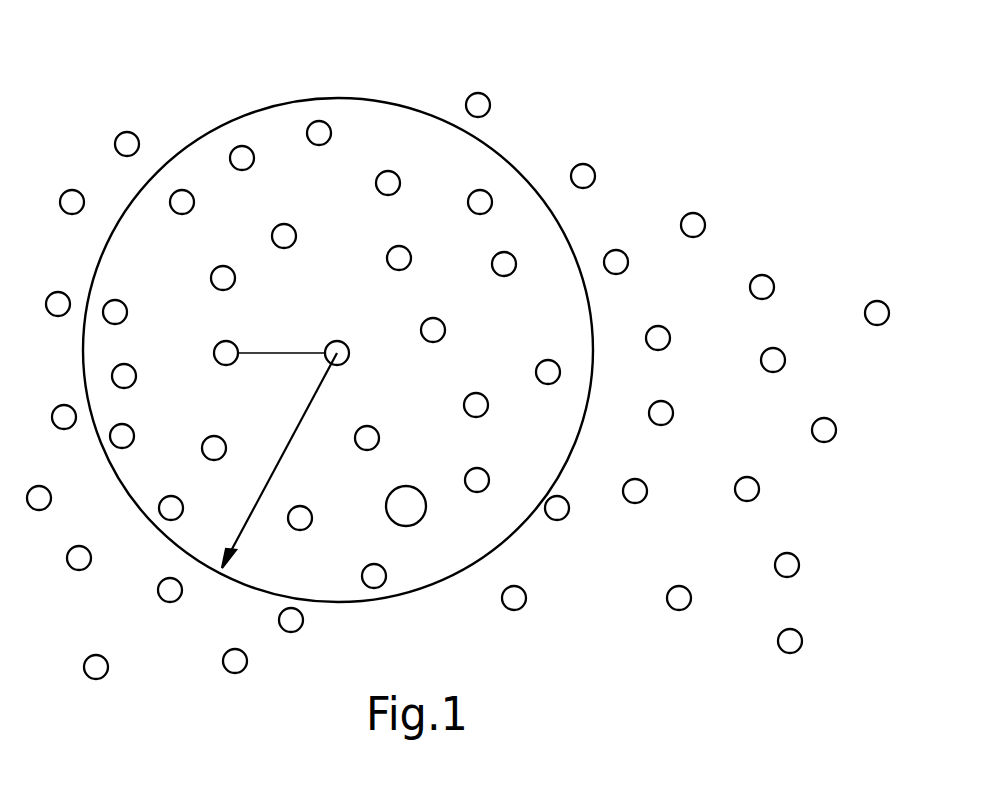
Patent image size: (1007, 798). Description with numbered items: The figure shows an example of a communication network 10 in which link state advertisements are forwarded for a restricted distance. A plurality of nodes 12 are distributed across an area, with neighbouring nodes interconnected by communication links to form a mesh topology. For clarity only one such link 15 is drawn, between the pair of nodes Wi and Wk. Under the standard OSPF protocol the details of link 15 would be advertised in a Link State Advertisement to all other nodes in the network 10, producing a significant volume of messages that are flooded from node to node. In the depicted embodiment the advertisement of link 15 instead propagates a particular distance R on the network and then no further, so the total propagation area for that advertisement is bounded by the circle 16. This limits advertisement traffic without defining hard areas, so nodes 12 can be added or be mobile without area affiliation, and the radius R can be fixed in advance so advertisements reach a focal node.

The communication network 10 is at (659, 96).
The node 12 is at (119, 131).
The link 15 is at (272, 351).
The circle 16 is at (331, 98).